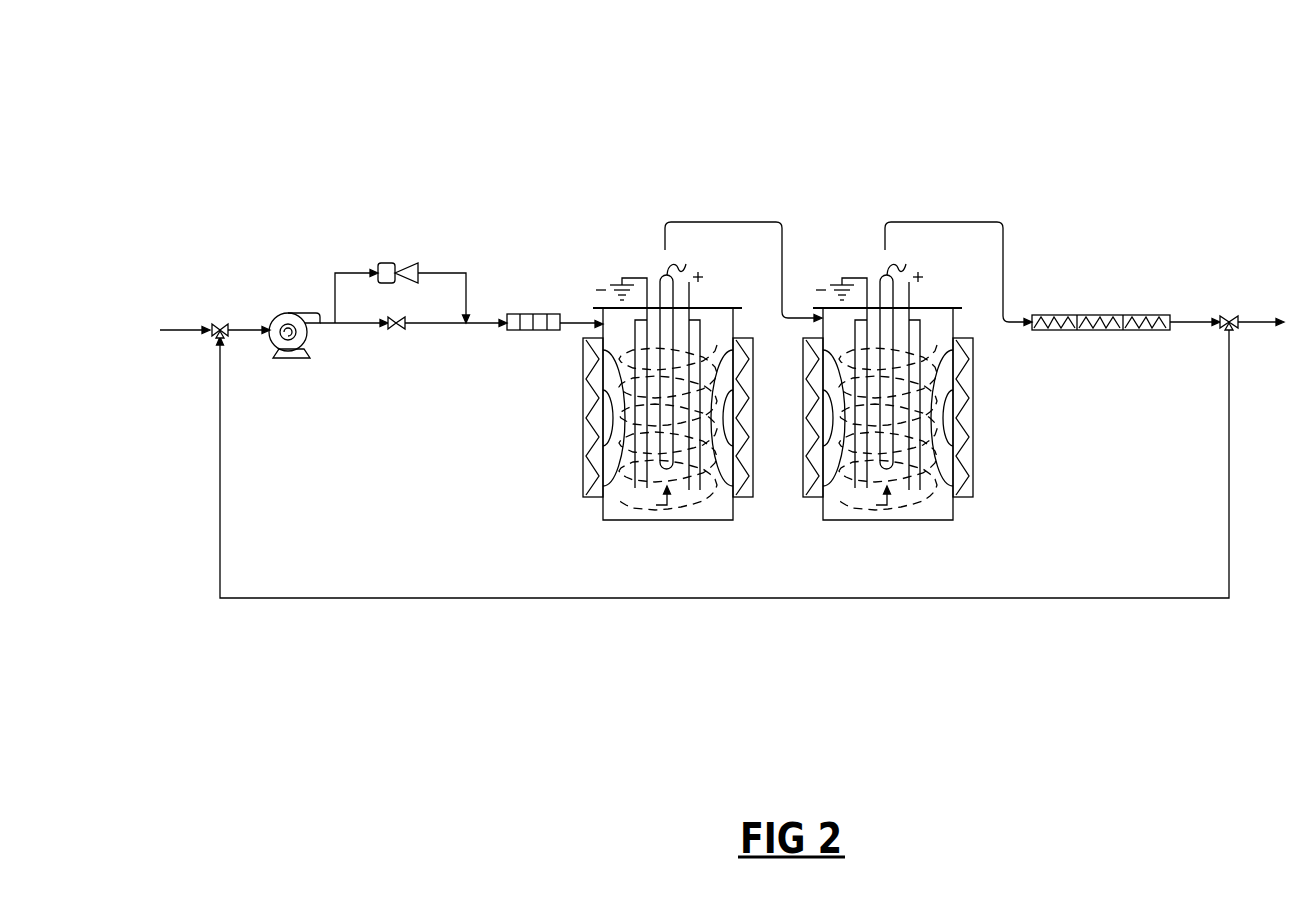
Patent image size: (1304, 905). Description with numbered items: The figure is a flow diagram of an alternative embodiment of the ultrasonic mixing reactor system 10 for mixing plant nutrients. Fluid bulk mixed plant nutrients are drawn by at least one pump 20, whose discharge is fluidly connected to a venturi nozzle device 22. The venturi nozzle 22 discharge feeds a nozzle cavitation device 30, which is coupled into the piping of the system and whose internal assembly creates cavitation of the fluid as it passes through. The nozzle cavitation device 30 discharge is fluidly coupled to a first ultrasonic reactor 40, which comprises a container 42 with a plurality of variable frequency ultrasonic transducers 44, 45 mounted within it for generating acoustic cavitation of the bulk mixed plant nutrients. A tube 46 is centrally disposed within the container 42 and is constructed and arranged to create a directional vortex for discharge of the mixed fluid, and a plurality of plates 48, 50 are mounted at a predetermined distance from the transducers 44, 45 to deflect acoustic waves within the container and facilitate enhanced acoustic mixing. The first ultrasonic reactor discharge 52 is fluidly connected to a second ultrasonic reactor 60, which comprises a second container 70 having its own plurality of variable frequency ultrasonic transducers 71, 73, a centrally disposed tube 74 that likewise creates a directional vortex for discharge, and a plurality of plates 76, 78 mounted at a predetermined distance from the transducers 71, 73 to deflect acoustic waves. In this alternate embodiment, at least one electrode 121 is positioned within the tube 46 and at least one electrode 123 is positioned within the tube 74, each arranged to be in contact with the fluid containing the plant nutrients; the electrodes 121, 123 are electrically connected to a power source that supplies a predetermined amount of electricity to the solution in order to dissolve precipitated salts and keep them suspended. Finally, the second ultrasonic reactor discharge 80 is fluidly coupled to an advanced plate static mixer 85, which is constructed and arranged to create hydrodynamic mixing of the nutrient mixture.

The ultrasonic mixing reactor system 10 is at (266, 739).
The pump 20 is at (238, 255).
The venturi nozzle device 22 is at (369, 237).
The nozzle cavitation device 30 is at (474, 241).
The first ultrasonic reactor 40 is at (610, 434).
The container 42 is at (667, 301).
The variable frequency ultrasonic transducer 44 is at (535, 421).
The variable frequency ultrasonic transducer 45 is at (710, 504).
The tube 46 is at (608, 321).
The plate 48 is at (583, 443).
The plate 50 is at (616, 507).
The first ultrasonic reactor discharge 52 is at (751, 202).
The second ultrasonic reactor 60 is at (970, 411).
The second container 70 is at (975, 306).
The variable frequency ultrasonic transducer 71 is at (844, 504).
The variable frequency ultrasonic transducer 73 is at (1019, 423).
The tube 74 is at (882, 285).
The plate 76 is at (954, 495).
The plate 78 is at (962, 466).
The second ultrasonic reactor discharge 80 is at (1018, 239).
The advanced plate static mixer 85 is at (1154, 241).
The electrode 121 is at (585, 275).
The electrode 123 is at (1009, 252).